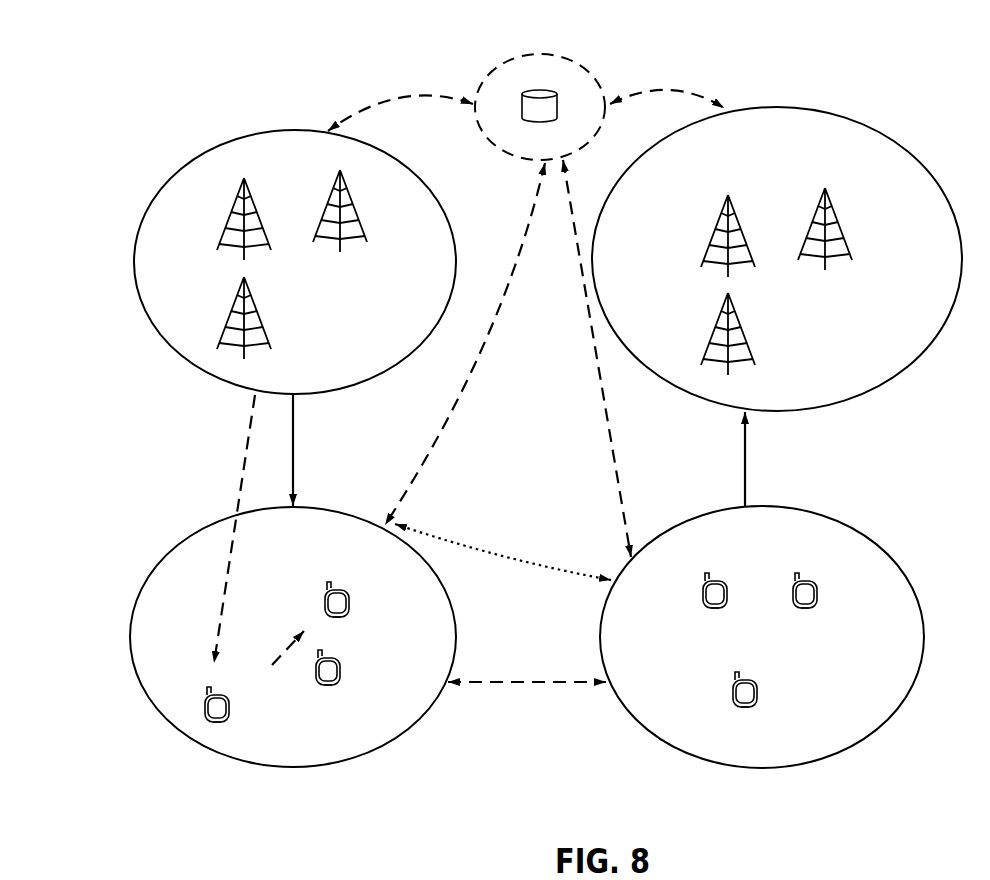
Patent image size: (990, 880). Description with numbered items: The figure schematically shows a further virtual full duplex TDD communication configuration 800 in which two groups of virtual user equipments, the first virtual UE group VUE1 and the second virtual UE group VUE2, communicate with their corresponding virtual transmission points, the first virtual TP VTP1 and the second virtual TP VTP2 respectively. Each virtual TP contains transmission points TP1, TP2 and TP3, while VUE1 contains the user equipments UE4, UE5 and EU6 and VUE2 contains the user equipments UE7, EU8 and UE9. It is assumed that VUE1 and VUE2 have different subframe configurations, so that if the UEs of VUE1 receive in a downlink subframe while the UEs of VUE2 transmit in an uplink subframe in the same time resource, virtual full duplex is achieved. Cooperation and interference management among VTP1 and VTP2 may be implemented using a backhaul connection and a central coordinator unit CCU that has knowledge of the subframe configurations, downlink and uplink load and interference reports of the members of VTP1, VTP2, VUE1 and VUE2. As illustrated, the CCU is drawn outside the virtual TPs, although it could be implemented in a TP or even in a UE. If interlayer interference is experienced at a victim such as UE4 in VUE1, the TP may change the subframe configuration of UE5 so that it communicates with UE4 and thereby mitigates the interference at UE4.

The virtual full duplex TDD communication configuration 800 is at (680, 33).
The central coordinator unit CCU is at (540, 91).
The first virtual TP VTP1 is at (295, 267).
The second virtual TP VTP2 is at (777, 265).
The transmission point TP1 is at (453, 227).
The transmission point TP2 is at (602, 220).
The transmission point TP3 is at (460, 326).
The first virtual UE group VUE1 is at (293, 654).
The second virtual UE group VUE2 is at (762, 658).
The user equipment UE4 is at (355, 590).
The user equipment UE5 is at (237, 697).
The user equipment EU6 is at (342, 692).
The user equipment UE7 is at (829, 607).
The user equipment EU8 is at (695, 607).
The user equipment UE9 is at (721, 697).